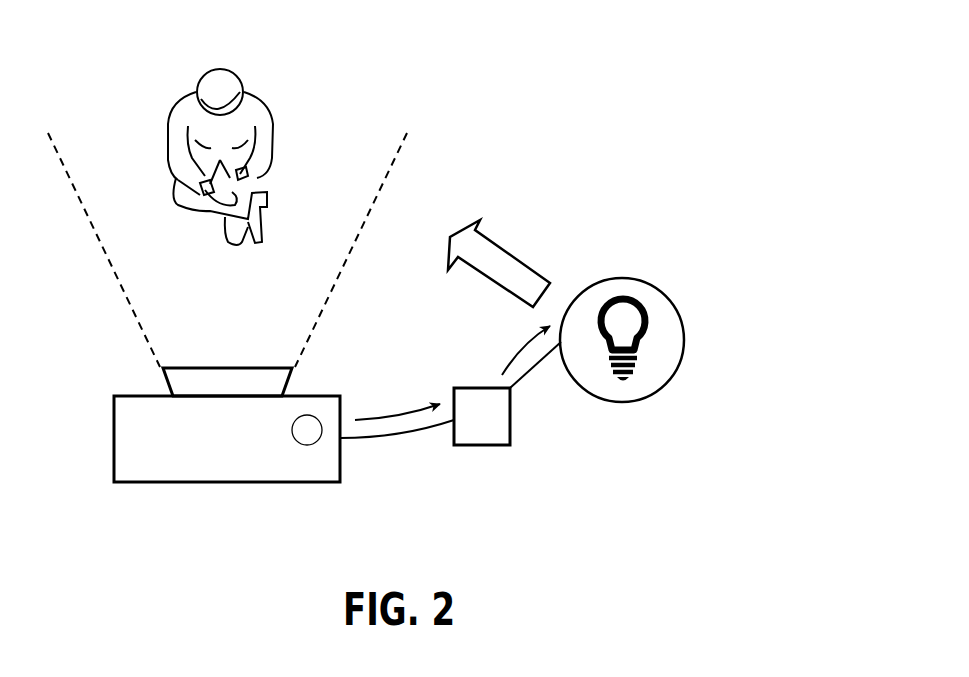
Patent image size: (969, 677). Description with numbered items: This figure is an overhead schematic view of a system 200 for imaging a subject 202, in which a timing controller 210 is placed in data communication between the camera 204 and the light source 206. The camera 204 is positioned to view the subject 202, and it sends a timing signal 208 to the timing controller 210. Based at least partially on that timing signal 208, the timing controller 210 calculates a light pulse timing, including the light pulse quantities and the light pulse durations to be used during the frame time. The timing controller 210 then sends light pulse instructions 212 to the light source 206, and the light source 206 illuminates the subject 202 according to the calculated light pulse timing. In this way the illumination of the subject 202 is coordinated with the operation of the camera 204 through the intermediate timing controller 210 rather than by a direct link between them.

The system 200 is at (756, 90).
The subject 202 is at (287, 101).
The camera 204 is at (210, 455).
The light source 206 is at (668, 295).
The timing signal 208 is at (403, 410).
The timing controller 210 is at (510, 418).
The light pulse instructions 212 is at (517, 362).